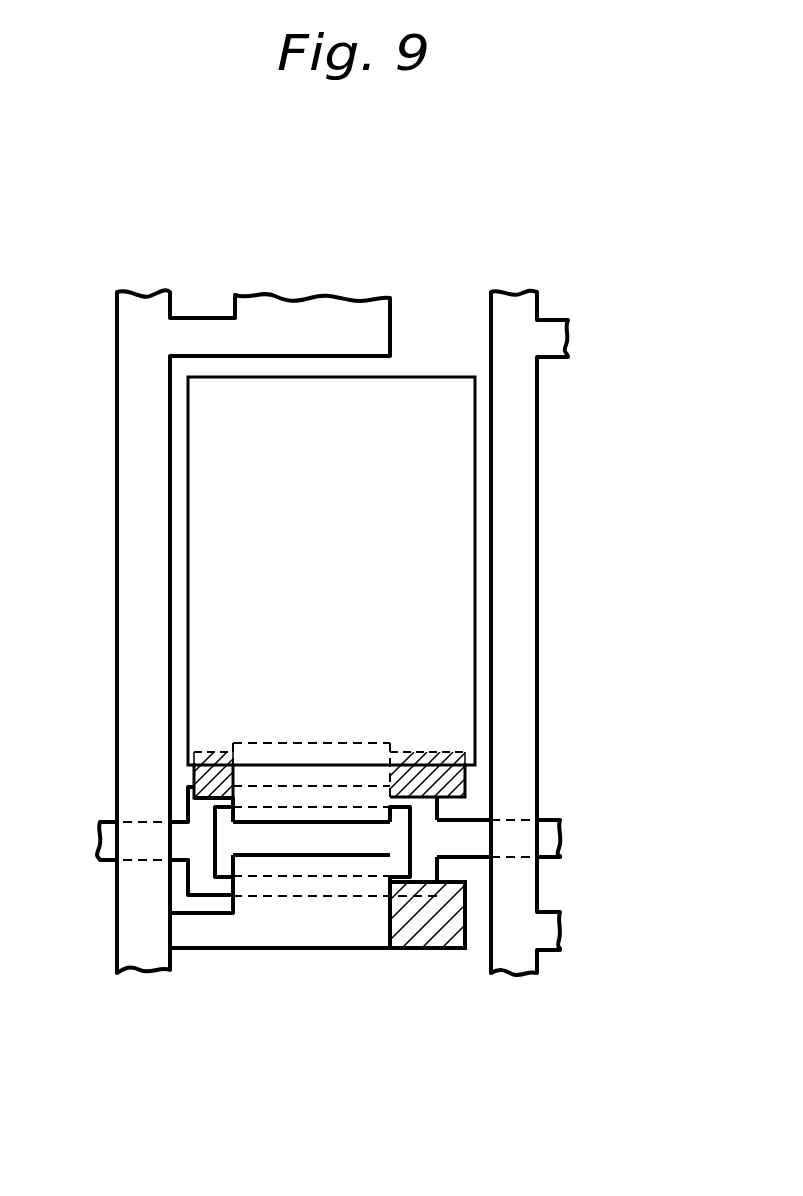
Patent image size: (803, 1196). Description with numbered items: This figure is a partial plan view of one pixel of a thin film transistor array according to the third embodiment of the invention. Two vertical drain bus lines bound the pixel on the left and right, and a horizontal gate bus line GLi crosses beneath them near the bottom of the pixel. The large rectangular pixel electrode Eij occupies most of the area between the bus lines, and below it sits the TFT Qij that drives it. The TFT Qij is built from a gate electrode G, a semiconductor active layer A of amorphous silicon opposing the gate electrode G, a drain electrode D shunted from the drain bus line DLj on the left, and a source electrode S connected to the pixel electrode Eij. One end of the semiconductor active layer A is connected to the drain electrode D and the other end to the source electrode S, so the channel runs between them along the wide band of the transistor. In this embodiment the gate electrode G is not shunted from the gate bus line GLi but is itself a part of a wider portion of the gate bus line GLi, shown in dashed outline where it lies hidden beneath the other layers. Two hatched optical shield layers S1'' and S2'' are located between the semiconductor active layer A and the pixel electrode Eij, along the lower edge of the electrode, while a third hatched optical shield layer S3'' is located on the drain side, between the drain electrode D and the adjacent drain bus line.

The pixel electrode Eij is at (331, 571).
The source electrode S is at (315, 745).
The optical shield layer S1'' is at (216, 744).
The optical shield layer S2'' is at (436, 744).
The optical shield layer S3'' is at (435, 942).
The gate bus line GLi is at (547, 820).
The TFT Qij is at (312, 842).
The semiconductor active layer A is at (410, 858).
The drain bus line DLj is at (117, 917).
The drain electrode D is at (235, 880).
The gate electrode G is at (300, 897).